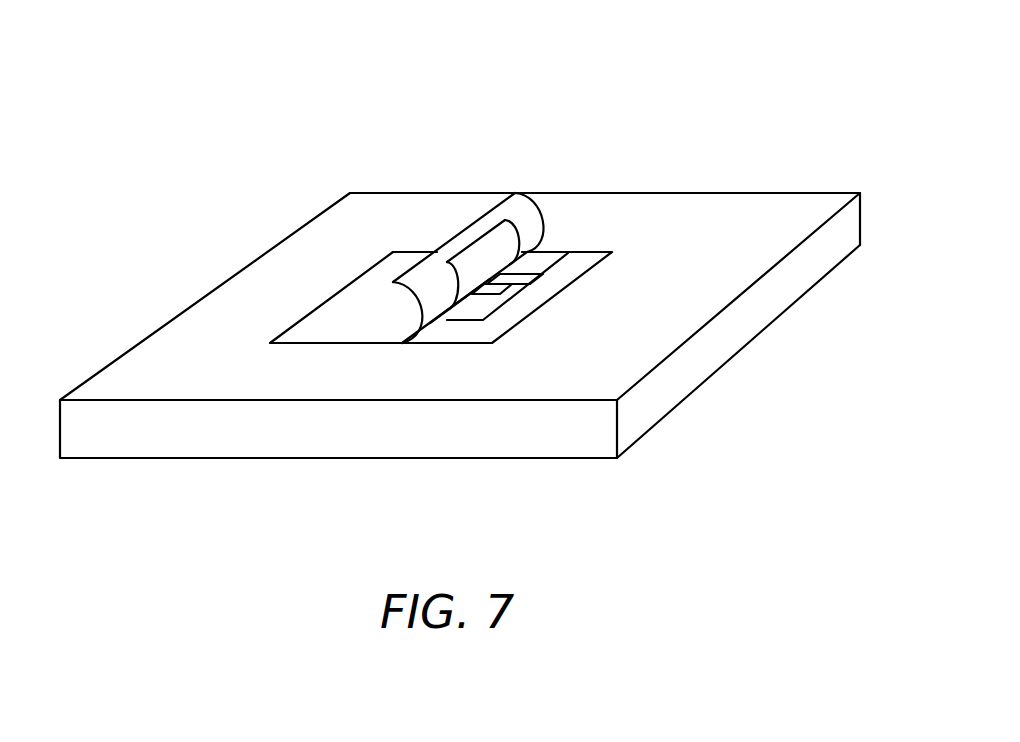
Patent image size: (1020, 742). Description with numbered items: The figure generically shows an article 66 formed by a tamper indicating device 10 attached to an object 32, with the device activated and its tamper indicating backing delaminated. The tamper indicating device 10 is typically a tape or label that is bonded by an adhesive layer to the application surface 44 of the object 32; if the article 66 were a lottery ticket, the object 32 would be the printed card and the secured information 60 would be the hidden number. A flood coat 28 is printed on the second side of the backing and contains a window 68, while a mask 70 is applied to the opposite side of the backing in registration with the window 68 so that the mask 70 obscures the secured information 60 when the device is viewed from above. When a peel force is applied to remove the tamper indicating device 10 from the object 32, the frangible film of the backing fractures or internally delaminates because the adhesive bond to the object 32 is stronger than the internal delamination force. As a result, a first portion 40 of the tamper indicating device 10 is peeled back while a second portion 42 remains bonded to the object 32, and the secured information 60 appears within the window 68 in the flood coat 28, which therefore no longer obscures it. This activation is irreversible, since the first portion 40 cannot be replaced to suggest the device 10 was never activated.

The tamper indicating device 10 is at (315, 318).
The flood coat 28 is at (553, 282).
The object 32 is at (137, 440).
The first portion 40 is at (521, 200).
The second portion 42 is at (556, 310).
The application surface 44 is at (640, 220).
The secured information 60 is at (473, 290).
The article 66 is at (670, 80).
The window 68 is at (458, 296).
The mask 70 is at (470, 268).